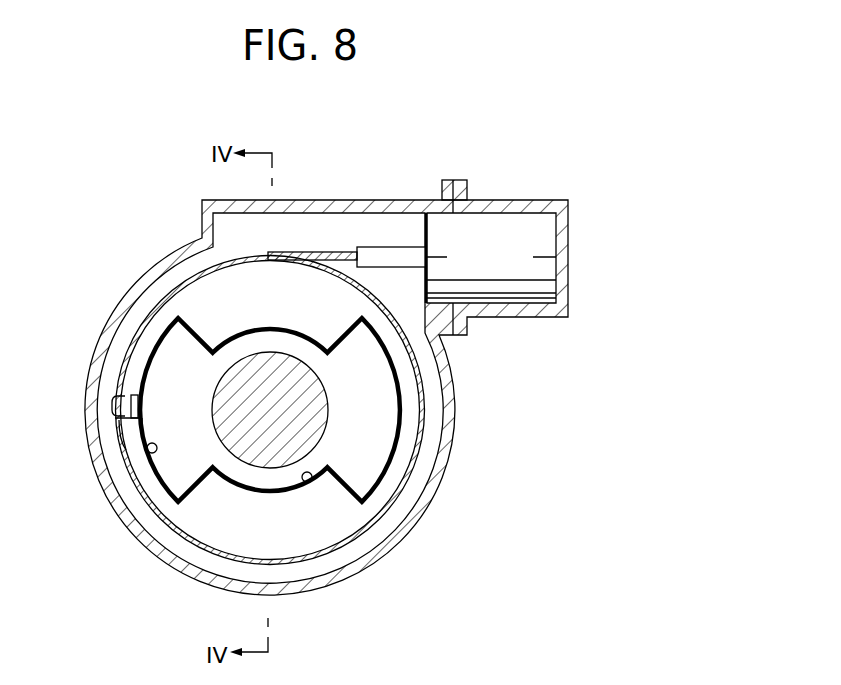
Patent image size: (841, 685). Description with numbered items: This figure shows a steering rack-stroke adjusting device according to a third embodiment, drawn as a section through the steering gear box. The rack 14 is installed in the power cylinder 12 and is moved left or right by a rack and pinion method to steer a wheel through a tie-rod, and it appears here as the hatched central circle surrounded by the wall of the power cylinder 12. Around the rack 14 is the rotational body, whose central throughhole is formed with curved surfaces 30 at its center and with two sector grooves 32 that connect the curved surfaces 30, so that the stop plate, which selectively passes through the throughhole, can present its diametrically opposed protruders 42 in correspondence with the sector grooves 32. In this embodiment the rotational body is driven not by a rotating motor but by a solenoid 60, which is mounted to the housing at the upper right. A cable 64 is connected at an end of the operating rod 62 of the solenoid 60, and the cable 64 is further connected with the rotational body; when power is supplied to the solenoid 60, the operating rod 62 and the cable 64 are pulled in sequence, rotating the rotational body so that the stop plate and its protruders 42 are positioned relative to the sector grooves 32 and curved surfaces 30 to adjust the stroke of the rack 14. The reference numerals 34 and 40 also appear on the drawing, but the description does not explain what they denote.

The power cylinder 12 is at (93, 450).
The rack 14 is at (320, 411).
The curved surfaces 30 is at (315, 480).
The sector grooves 32 is at (157, 443).
The stator yoke 34 is at (285, 530).
The stator core 40 is at (245, 478).
The protruders 42 is at (157, 380).
The solenoid 60 is at (505, 247).
The operating rod 62 is at (389, 247).
The cable 64 is at (316, 252).